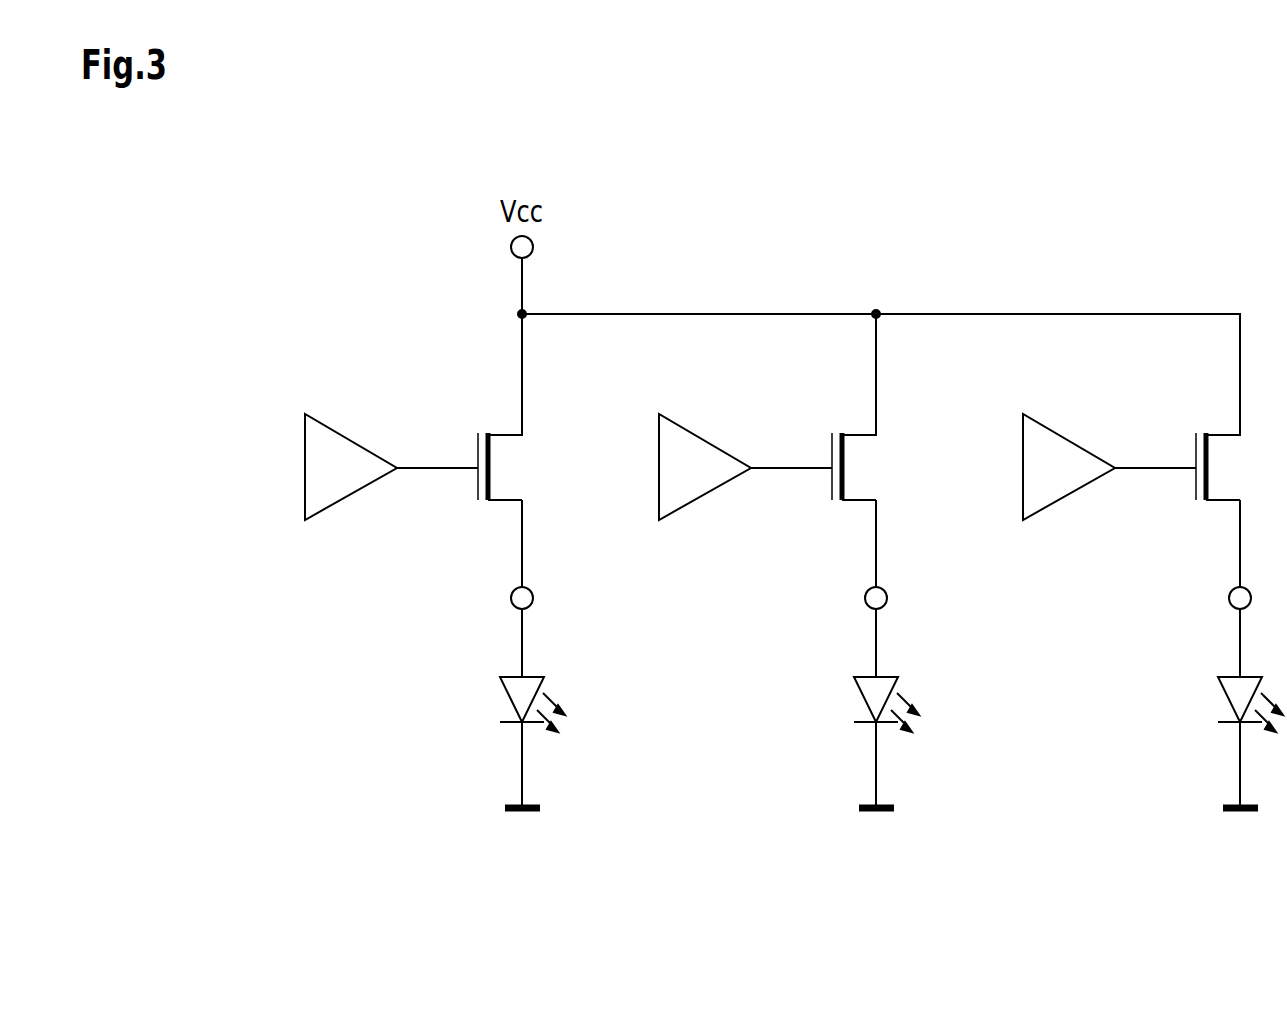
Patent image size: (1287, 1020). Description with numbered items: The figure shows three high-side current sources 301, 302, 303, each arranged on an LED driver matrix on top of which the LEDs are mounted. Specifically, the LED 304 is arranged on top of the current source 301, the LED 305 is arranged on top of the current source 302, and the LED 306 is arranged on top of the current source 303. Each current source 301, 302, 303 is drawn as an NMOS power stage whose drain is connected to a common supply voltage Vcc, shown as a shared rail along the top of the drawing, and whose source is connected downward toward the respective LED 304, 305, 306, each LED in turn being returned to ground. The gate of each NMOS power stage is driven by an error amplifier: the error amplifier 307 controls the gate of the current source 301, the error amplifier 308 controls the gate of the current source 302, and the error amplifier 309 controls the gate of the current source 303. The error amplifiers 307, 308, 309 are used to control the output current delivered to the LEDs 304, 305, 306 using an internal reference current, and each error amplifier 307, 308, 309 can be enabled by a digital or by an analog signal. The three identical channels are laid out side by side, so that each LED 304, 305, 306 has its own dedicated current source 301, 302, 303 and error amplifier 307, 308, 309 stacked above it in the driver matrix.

The high-side current source 301 is at (508, 450).
The high-side current source 302 is at (862, 450).
The high-side current source 303 is at (1226, 450).
The LED 304 is at (508, 697).
The LED 305 is at (862, 697).
The LED 306 is at (1226, 697).
The error amplifier 307 is at (391, 474).
The error amplifier 308 is at (745, 474).
The error amplifier 309 is at (1109, 474).